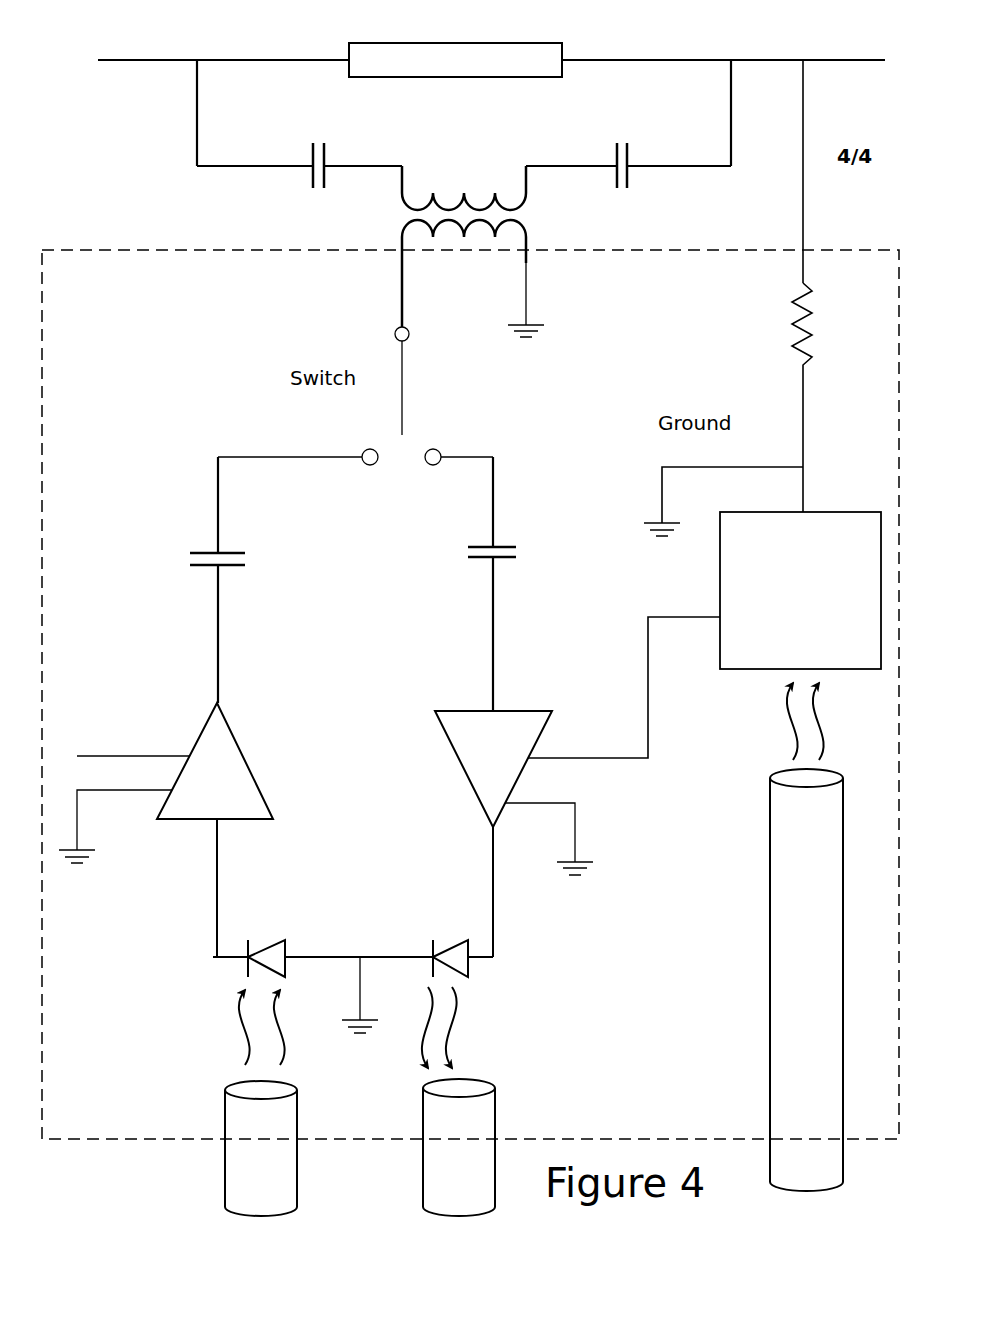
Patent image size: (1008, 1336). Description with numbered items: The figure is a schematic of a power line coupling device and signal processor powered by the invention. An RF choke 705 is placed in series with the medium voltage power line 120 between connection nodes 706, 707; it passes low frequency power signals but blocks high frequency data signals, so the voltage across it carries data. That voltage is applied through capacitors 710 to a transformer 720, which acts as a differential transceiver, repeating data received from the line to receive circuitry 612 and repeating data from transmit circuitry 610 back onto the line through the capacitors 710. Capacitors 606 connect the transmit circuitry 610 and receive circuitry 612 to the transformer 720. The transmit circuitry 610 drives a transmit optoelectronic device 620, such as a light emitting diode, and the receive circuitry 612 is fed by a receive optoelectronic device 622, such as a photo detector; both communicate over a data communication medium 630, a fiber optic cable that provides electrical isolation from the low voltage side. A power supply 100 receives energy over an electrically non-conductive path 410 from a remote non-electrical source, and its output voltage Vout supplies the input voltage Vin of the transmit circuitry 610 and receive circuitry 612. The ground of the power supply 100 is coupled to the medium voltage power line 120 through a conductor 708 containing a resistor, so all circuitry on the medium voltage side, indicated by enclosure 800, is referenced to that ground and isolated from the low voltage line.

The power supply 100 is at (800, 590).
The medium voltage power line 120 is at (760, 60).
The electrically non-conductive path 410 is at (770, 881).
The capacitors 606 is at (190, 540).
The transmit circuitry 610 is at (207, 718).
The receive circuitry 612 is at (500, 712).
The transmit optoelectronic device 620 is at (257, 938).
The receive optoelectronic device 622 is at (470, 976).
The data communication medium 630 is at (453, 1217).
The RF choke 705 is at (348, 43).
The connection node 706 is at (200, 57).
The connection node 707 is at (730, 60).
The conductor 708 is at (802, 230).
The capacitors 710 is at (312, 143).
The transformer 720 is at (526, 263).
The medium voltage side circuitry 800 is at (103, 247).